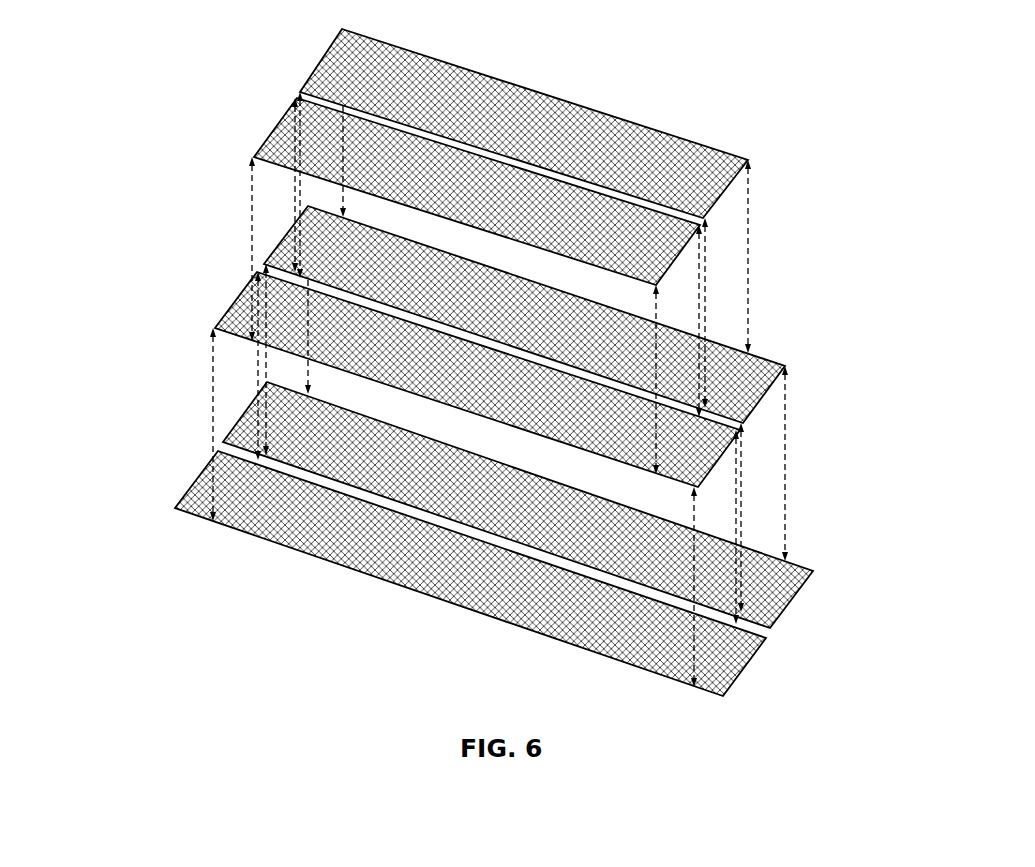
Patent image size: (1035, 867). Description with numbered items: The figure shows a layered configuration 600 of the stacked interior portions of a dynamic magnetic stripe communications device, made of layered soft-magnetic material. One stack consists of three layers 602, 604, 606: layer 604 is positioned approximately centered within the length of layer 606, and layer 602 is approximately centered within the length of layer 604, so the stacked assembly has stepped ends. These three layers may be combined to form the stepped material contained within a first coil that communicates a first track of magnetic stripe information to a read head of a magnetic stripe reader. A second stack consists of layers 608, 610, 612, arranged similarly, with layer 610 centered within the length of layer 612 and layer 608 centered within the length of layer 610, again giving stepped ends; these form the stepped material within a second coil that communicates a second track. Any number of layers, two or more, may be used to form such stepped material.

The layered configuration 600 is at (595, 377).
The soft-magnetic material layer 602 is at (724, 235).
The soft-magnetic material layer 604 is at (764, 441).
The soft-magnetic material layer 606 is at (796, 645).
The soft-magnetic material layer 608 is at (676, 303).
The soft-magnetic material layer 610 is at (716, 503).
The soft-magnetic material layer 612 is at (472, 588).